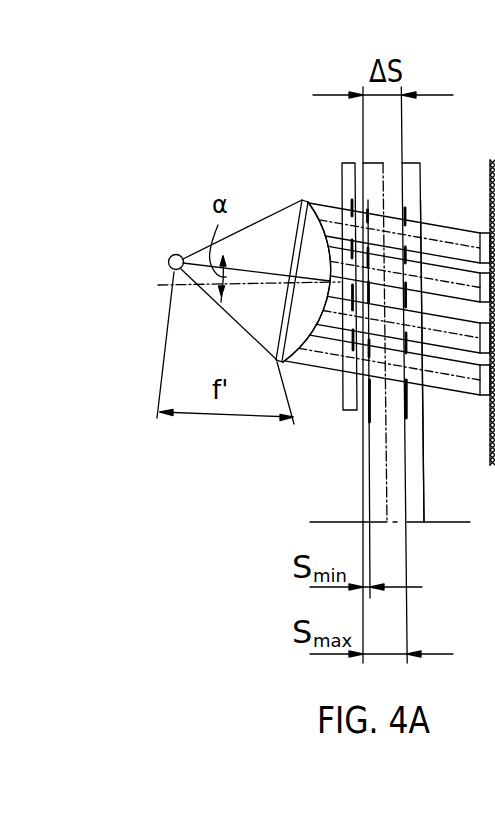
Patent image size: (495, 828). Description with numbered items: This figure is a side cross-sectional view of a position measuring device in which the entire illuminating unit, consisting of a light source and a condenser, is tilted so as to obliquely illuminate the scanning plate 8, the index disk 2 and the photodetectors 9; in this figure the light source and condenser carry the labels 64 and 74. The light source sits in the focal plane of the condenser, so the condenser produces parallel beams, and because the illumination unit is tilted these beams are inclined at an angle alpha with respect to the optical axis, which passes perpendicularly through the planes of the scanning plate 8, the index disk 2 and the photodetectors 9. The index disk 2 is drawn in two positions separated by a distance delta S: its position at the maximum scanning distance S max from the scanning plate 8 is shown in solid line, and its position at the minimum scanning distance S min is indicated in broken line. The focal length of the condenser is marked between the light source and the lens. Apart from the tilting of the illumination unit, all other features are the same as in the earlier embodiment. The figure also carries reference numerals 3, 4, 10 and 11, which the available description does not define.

The index disk 2 is at (416, 172).
The graduation of scale plate 3 is at (424, 238).
The scale plate carrier 4 is at (422, 378).
The scanning plate 8 is at (352, 163).
The photodetectors 9 is at (480, 247).
The collimating lens surface 10 is at (330, 208).
The scanning apertures 11 is at (347, 358).
The light source 64 is at (175, 254).
The collimating lens 74 is at (297, 237).